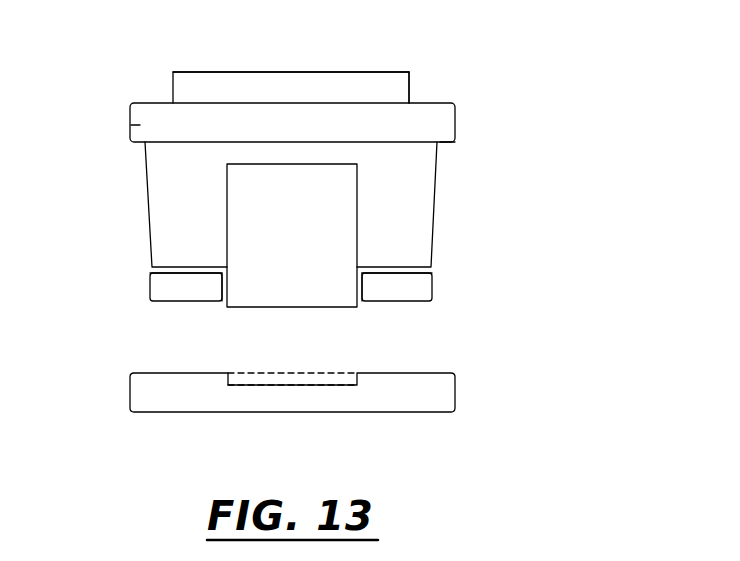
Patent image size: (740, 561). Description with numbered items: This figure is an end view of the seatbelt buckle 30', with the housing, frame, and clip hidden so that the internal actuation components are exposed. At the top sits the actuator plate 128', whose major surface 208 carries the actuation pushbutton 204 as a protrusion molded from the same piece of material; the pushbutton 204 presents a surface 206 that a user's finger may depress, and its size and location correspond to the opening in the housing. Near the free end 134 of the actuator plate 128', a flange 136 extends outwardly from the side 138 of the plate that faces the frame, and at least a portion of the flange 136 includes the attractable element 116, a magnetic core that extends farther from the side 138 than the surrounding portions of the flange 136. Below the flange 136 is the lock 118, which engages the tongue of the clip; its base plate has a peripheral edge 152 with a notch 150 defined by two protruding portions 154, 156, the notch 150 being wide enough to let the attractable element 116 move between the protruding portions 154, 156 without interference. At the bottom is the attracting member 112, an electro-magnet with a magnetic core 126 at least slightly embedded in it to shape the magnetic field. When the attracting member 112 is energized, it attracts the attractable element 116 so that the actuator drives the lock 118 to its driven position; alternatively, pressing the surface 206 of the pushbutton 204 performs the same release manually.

The seatbelt buckle 30' is at (636, 57).
The free end 134 is at (143, 110).
The actuator plate 128' is at (83, 144).
The surface 206 is at (283, 72).
The actuation pushbutton 204 is at (360, 86).
The major surface 208 is at (432, 103).
The side 138 is at (443, 142).
The flange 136 is at (420, 205).
The attractable element 116 is at (248, 195).
The protruding portion 156 is at (160, 285).
The notch 150 is at (230, 293).
The protruding portion 154 is at (413, 286).
The peripheral edge 152 is at (380, 293).
The lock 118 is at (437, 285).
The attracting member 112 is at (458, 392).
The magnetic core 126 is at (293, 380).